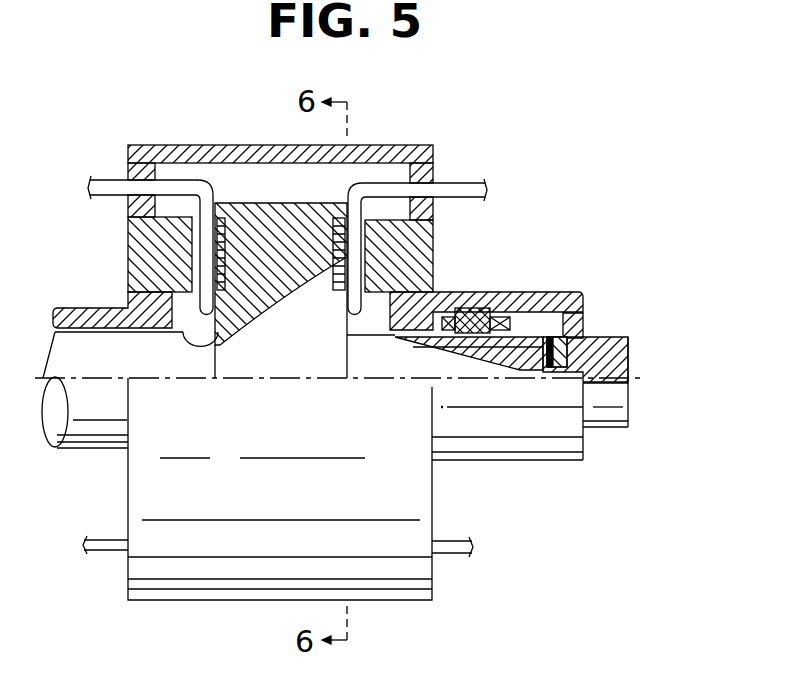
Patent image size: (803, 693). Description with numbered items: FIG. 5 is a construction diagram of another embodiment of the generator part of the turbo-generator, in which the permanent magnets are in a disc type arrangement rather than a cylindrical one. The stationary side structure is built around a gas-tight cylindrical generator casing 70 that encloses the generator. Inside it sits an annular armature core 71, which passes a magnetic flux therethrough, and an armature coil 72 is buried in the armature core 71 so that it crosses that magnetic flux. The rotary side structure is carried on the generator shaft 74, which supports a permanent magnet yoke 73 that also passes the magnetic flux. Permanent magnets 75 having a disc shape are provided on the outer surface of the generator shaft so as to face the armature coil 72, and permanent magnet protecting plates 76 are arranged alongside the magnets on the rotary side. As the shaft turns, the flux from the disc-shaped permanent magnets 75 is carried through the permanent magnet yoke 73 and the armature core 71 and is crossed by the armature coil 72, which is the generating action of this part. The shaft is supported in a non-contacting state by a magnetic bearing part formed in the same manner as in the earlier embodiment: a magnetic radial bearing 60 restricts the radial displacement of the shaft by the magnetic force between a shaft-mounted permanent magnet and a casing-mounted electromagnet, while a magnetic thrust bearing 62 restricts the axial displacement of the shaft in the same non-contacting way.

The magnetic radial bearing 60 is at (486, 308).
The magnetic thrust bearing 62 is at (538, 342).
The generator casing 70 is at (390, 158).
The armature core 71 is at (428, 243).
The armature coil 72 is at (467, 182).
The permanent magnet yoke 73 is at (295, 358).
The generator shaft 74 is at (80, 448).
The permanent magnets 75 is at (333, 247).
The permanent magnet protecting plates 76 is at (220, 257).